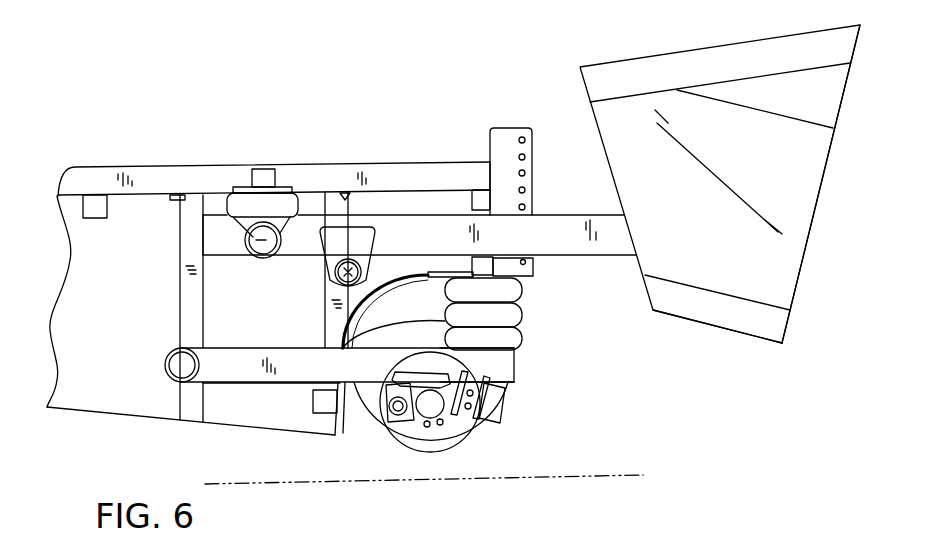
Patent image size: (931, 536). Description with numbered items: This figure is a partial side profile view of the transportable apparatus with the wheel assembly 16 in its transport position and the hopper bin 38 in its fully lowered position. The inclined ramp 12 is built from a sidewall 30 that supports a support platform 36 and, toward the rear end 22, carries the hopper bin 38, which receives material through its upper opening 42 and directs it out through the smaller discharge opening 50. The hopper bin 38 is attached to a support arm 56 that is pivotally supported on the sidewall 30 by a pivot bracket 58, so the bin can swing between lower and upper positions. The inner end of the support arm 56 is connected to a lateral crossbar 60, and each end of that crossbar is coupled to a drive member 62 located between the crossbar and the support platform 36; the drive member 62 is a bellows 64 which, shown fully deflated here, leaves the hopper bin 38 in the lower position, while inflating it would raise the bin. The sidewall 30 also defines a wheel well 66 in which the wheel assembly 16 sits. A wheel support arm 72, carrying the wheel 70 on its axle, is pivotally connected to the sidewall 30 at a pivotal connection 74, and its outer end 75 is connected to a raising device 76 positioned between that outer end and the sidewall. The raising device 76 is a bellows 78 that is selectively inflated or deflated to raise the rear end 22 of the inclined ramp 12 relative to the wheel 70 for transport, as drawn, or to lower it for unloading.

The inclined ramp 12 is at (55, 162).
The support platform 36 is at (152, 195).
The bellows 64 is at (245, 207).
The drive member 62 is at (288, 178).
The lateral crossbar 60 is at (258, 240).
The support arm 56 is at (430, 225).
The pivot bracket 58 is at (360, 243).
The wheel well 66 is at (433, 277).
The raising device 76 is at (542, 297).
The bellows 78 is at (503, 313).
The wheel support arm 72 is at (223, 365).
The pivotal connection 74 is at (178, 360).
The outer end 75 is at (503, 362).
The sidewall 30 is at (78, 388).
The rear end 22 is at (292, 417).
The wheel 70 is at (438, 468).
The wheel assembly 16 is at (553, 418).
The upper opening 42 is at (650, 53).
The hopper bin 38 is at (802, 265).
The discharge opening 50 is at (713, 327).